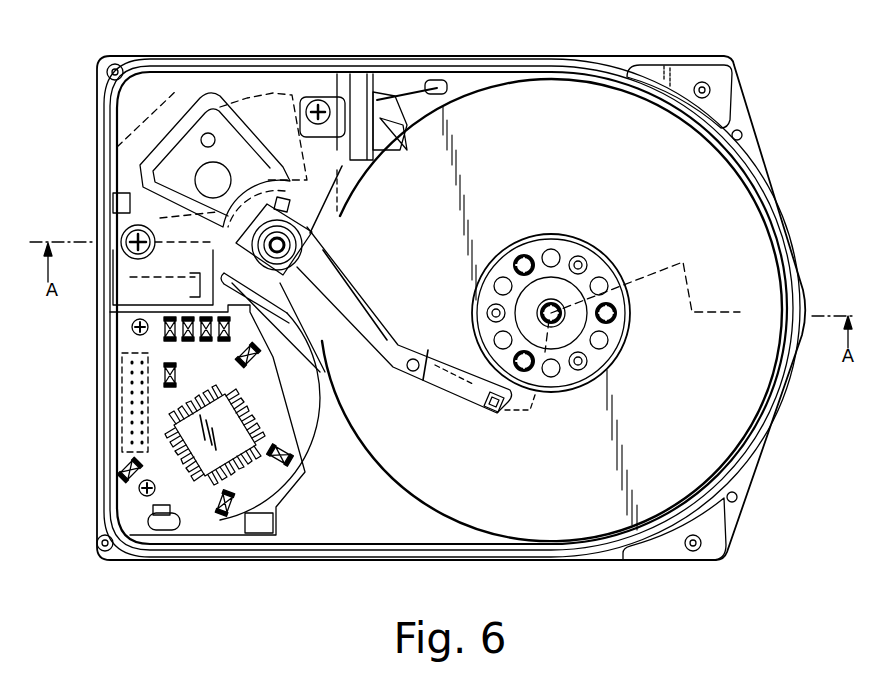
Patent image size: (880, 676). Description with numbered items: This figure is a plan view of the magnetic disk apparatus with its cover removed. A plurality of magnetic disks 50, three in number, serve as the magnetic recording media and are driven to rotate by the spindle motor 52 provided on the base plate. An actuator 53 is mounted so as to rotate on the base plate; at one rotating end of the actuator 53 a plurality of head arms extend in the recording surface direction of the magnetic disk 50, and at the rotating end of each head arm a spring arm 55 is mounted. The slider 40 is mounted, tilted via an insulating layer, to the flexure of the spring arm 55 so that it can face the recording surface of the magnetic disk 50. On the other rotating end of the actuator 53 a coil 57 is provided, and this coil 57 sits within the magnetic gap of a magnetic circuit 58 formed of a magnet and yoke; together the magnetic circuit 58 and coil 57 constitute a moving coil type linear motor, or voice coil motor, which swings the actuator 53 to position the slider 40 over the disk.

The slider 40 is at (499, 415).
The magnetic disk 50 is at (730, 430).
The spindle motor 52 is at (577, 396).
The actuator 53 is at (364, 278).
The spring arm 55 is at (440, 392).
The coil 57 is at (198, 106).
The magnetic circuit 58 is at (292, 95).